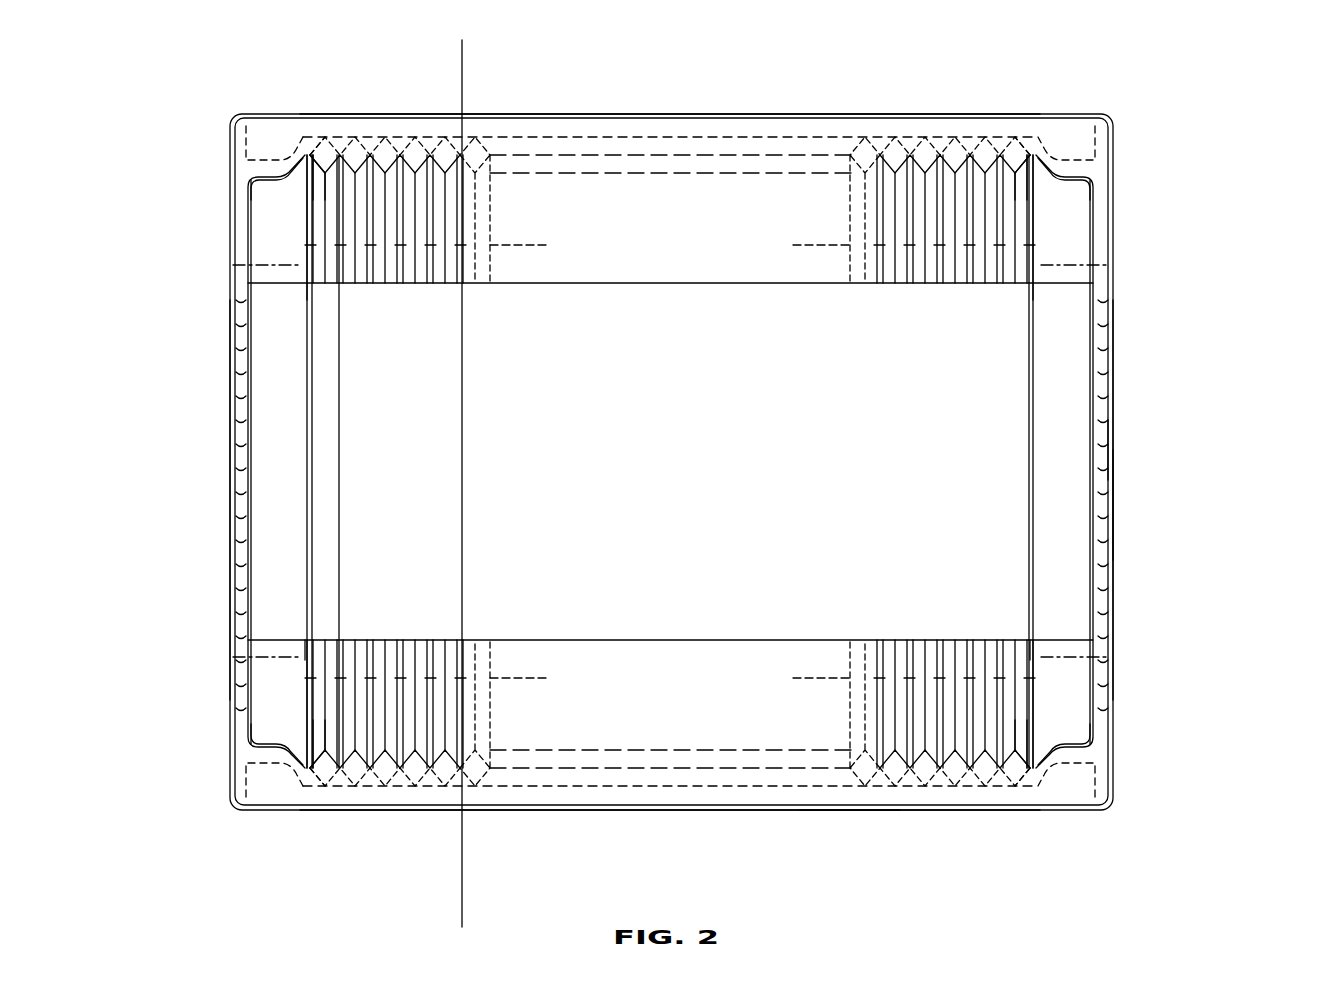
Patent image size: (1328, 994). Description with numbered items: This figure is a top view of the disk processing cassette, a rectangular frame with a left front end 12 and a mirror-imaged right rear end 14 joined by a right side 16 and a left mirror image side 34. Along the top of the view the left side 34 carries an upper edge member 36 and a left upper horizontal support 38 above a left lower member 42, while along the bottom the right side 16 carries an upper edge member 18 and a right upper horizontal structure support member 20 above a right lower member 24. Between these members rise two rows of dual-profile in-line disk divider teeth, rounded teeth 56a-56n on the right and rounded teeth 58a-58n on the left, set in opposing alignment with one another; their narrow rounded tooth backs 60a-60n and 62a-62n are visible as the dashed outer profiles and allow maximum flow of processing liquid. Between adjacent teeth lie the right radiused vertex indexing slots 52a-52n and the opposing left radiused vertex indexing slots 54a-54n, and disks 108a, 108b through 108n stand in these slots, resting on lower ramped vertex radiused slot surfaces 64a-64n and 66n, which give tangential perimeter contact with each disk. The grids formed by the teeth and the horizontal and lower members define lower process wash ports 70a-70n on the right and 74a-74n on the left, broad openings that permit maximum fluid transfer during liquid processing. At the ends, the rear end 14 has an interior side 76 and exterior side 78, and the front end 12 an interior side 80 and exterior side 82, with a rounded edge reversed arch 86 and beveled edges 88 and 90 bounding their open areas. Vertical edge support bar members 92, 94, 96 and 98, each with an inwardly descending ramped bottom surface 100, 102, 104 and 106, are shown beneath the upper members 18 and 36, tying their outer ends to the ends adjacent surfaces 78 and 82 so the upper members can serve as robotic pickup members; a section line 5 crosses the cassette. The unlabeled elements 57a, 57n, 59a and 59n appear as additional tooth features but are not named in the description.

The left front end 12 is at (148, 432).
The right rear end 14 is at (1248, 505).
The right side 16 is at (856, 888).
The upper edge member 18 is at (808, 810).
The right upper horizontal structure support member 20 is at (683, 787).
The lower member 24 is at (268, 638).
The left mirror image side 34 is at (563, 85).
The upper edge member 36 is at (757, 114).
The left upper horizontal support 38 is at (672, 137).
The lower member 42 is at (270, 282).
The right radiused vertex indexing slot 52a is at (304, 770).
The right radiused vertex indexing slot 52n is at (1036, 773).
The left radiused vertex indexing slot 54a is at (310, 153).
The left radiused vertex indexing slot 54n is at (1035, 154).
The rounded tooth 56a is at (322, 775).
The rounded tooth 56n is at (1016, 772).
The lower pleat valley 57a is at (326, 782).
The lower pleat valley 57n is at (1012, 772).
The rounded tooth 58a is at (328, 150).
The rounded tooth 58n is at (1028, 157).
The upper pleat valley 59a is at (333, 162).
The upper pleat valley 59n is at (1008, 158).
The rounded tooth back 60a is at (320, 775).
The rounded tooth back 60n is at (1012, 787).
The rounded tooth back 62a is at (326, 137).
The rounded tooth back 62n is at (1015, 140).
The lower ramped vertex radiused slot surface 64a is at (305, 640).
The lower ramped vertex radiused slot surface 64n is at (1028, 640).
The lower ramped vertex radiused slot surface 66n is at (307, 286).
The lower process wash port 70a is at (305, 685).
The lower process wash port 70n is at (1033, 720).
The lower process wash port 74a is at (306, 200).
The lower process wash port 74n is at (1035, 222).
The interior side 76 is at (1092, 340).
The exterior side 78 is at (1108, 352).
The interior side 80 is at (250, 368).
The exterior side 82 is at (240, 345).
The rounded edge reversed arch 86 is at (1100, 425).
The beveled edge 88 is at (1102, 457).
The beveled edge 90 is at (236, 468).
The vertical edge support bar member 92 is at (1103, 132).
The vertical edge support bar member 94 is at (1102, 770).
The vertical edge support bar member 96 is at (235, 790).
The vertical edge support bar member 98 is at (242, 132).
The inwardly descending ramped bottom surface 100 is at (1108, 152).
The inwardly descending ramped bottom surface 102 is at (1105, 788).
The inwardly descending ramped bottom surface 104 is at (240, 762).
The inwardly descending ramped bottom surface 106 is at (242, 145).
The disk 108a is at (307, 535).
The disk 108b is at (340, 535).
The disk 108n is at (1028, 400).
The section line 5- 5 is at (462, 48).